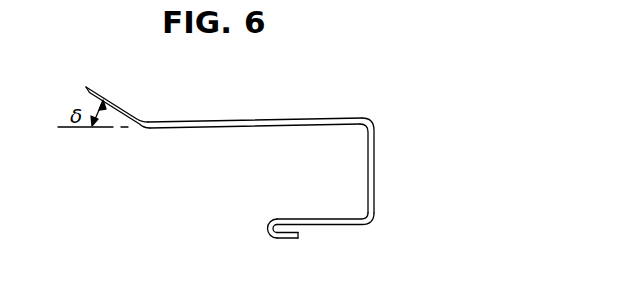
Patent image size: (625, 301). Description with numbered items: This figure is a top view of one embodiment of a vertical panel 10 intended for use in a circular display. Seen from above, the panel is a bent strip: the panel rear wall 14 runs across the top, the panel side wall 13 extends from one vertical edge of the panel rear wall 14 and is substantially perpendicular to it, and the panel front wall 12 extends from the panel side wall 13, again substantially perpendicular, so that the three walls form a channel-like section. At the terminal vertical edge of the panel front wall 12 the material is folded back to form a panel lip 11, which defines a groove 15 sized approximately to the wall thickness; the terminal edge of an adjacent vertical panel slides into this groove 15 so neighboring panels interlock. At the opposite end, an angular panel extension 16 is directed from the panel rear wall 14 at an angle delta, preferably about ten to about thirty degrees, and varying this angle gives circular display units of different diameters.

The vertical panel 10 is at (338, 104).
The panel lip 11 is at (278, 241).
The panel front wall 12 is at (353, 226).
The panel side wall 13 is at (375, 152).
The panel rear wall 14 is at (196, 119).
The groove 15 is at (296, 233).
The angular panel extension 16 is at (96, 99).